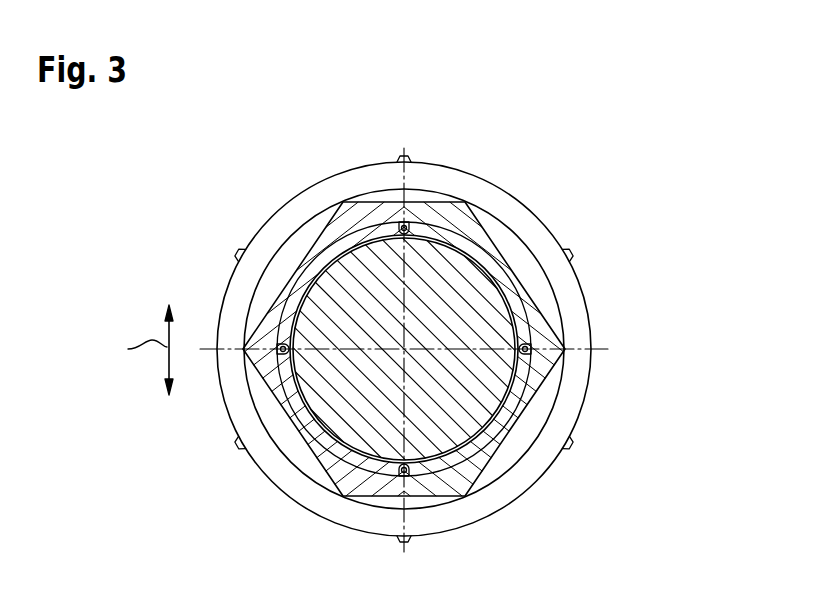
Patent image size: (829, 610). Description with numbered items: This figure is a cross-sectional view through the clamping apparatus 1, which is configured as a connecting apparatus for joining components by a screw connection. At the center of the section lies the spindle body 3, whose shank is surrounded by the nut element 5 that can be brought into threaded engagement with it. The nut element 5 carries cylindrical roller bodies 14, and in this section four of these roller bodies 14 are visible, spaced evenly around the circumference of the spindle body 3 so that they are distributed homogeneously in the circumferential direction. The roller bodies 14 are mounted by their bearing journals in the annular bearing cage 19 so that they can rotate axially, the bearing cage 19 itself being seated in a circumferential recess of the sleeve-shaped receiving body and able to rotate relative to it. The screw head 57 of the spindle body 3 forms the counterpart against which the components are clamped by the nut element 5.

The clamping apparatus 1 is at (590, 108).
The spindle body 3 is at (455, 420).
The nut element 5 is at (540, 398).
The roller bodies 14 is at (407, 222).
The bearing cage 19 is at (503, 225).
The screw head 57 is at (490, 205).